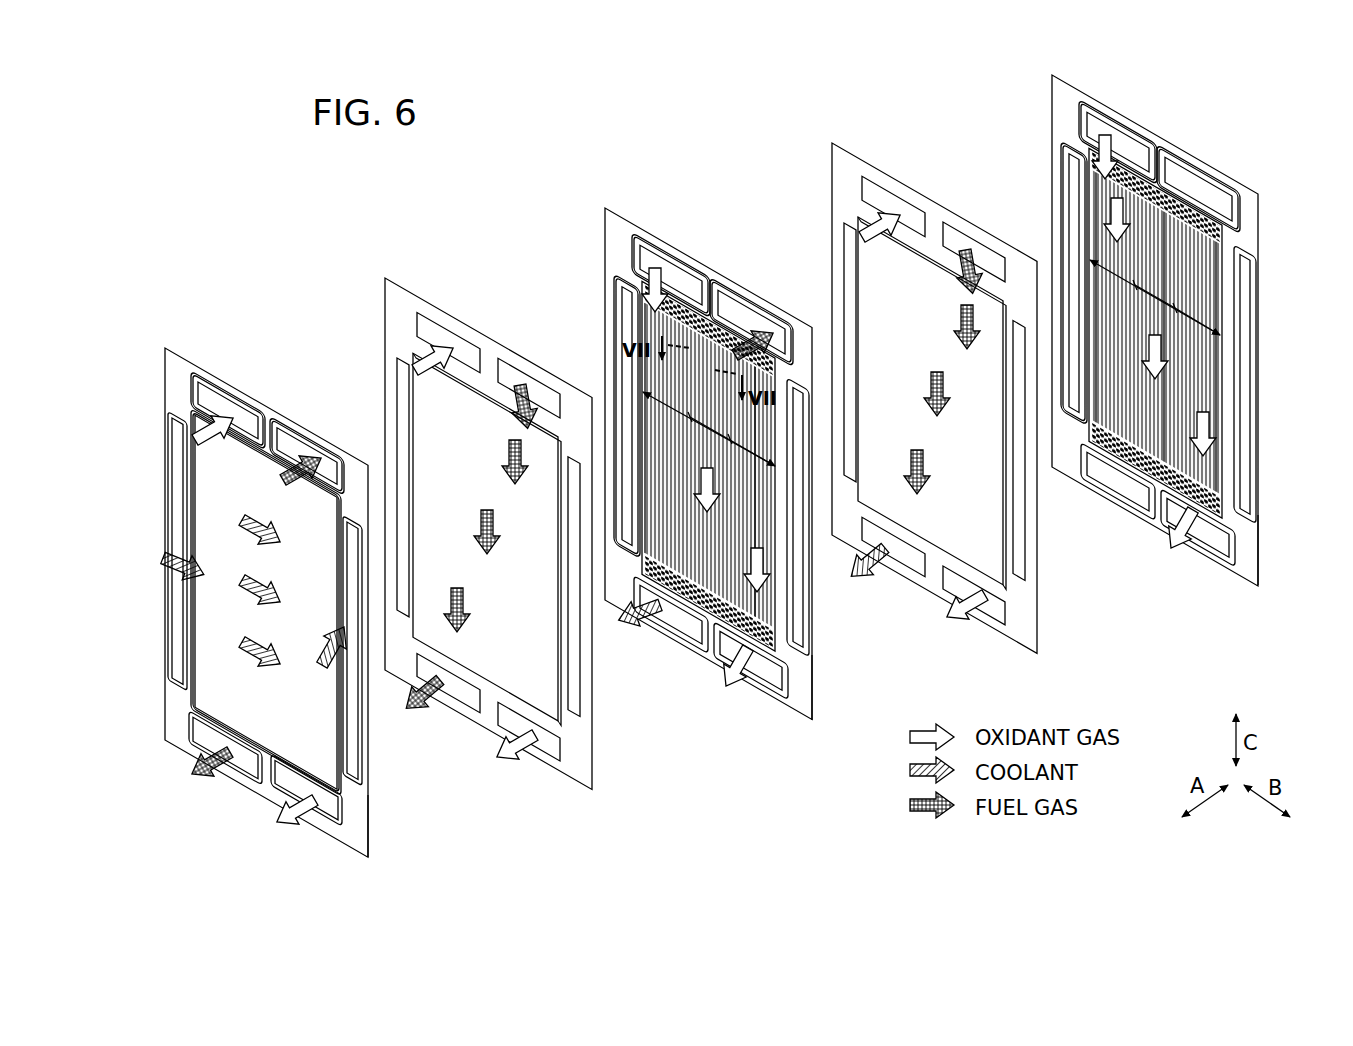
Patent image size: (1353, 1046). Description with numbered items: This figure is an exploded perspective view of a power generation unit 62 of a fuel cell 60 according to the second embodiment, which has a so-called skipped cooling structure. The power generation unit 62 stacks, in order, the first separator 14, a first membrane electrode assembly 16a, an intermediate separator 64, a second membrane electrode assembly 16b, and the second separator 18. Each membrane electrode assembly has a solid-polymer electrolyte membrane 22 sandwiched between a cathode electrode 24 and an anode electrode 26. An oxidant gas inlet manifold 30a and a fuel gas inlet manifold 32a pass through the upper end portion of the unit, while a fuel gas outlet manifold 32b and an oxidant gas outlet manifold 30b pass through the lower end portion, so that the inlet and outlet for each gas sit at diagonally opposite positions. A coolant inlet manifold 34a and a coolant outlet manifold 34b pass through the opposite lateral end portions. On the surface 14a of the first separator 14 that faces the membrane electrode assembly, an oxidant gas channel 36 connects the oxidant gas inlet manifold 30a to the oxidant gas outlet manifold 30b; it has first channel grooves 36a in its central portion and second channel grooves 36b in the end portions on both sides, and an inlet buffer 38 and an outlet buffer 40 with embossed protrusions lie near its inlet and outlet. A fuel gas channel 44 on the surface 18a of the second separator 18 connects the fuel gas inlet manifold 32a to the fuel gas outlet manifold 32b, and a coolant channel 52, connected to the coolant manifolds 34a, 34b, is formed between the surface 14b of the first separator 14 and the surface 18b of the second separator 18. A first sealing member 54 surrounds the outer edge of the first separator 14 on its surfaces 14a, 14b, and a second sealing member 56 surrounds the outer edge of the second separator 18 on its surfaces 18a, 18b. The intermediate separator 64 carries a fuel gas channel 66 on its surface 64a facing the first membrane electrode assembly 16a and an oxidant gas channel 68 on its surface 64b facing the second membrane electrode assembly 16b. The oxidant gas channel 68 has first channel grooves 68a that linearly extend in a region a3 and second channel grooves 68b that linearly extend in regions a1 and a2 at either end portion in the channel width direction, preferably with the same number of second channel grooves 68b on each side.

The first separator 14 is at (1050, 95).
The surface of first separator 14a is at (1250, 545).
The surface of first separator 14b is at (1248, 525).
The first membrane electrode assembly 16a is at (832, 145).
The second membrane electrode assembly 16b is at (385, 280).
The second separator 18 is at (163, 348).
The surface of second separator 18a is at (355, 802).
The surface of second separator 18b is at (360, 822).
The solid-polymer electrolyte membrane 22 is at (400, 345).
The cathode electrode 24 is at (446, 420).
The anode electrode 26 is at (446, 395).
The oxidant gas inlet manifold 30a is at (217, 393).
The oxidant gas outlet manifold 30b is at (320, 805).
The fuel gas inlet manifold 32a is at (298, 438).
The fuel gas outlet manifold 32b is at (243, 762).
The coolant inlet manifold 34a is at (178, 652).
The coolant outlet manifold 34b is at (350, 752).
The oxidant gas channel 36 is at (1195, 382).
The first channel grooves 36a is at (1160, 395).
The second channel grooves 36b is at (1095, 385).
The inlet buffer 38 is at (738, 340).
The outlet buffer 40 is at (680, 590).
The fuel gas channel 44 is at (212, 515).
The coolant channel 52 is at (205, 495).
The first sealing member 54 is at (695, 268).
The second sealing member 56 is at (252, 398).
The fuel cell 60 is at (466, 178).
The power generation unit 62 is at (432, 178).
The intermediate separator 64 is at (605, 210).
The surface of intermediate separator 64a is at (800, 663).
The surface of intermediate separator 64b is at (800, 685).
The fuel gas channel 66 is at (752, 530).
The oxidant gas channel 68 is at (745, 500).
The first channel grooves 68a is at (720, 402).
The second channel grooves 68b is at (650, 526).
The region a1 is at (931, 363).
The region a2 is at (975, 392).
The region a3 is at (932, 370).